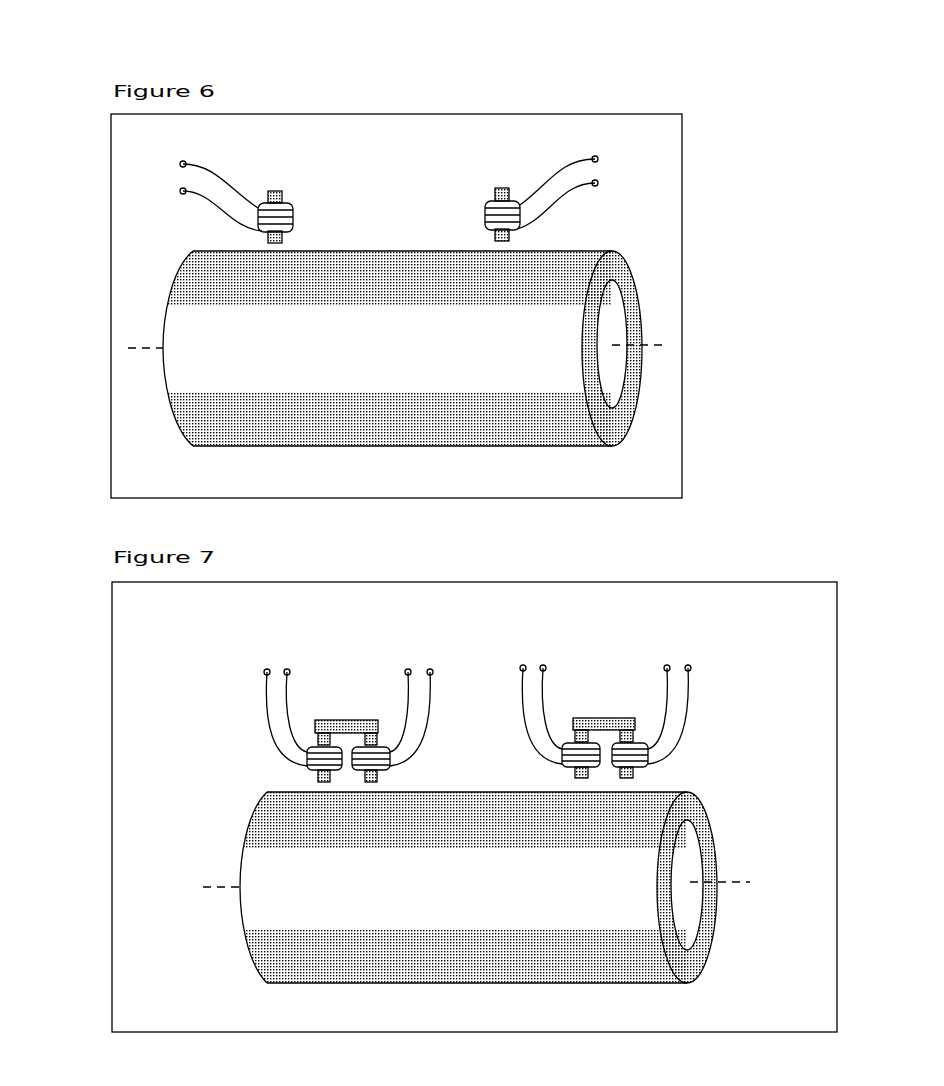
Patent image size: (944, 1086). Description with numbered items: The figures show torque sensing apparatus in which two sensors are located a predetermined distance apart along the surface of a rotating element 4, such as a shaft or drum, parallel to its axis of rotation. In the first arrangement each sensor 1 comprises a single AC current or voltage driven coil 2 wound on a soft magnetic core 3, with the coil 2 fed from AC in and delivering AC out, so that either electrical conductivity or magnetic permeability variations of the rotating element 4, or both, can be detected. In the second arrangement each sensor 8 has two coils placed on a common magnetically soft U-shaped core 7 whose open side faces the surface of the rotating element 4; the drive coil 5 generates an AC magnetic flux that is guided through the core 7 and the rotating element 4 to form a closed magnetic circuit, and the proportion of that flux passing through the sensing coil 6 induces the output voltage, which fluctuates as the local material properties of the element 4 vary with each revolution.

In FIG. 6, the sensor 1 is at (395, 128).
In FIG. 6, the coil 2 is at (472, 218).
In FIG. 6, the soft magnetic core 3 is at (496, 183).
In FIG. 6, the rotating element 4 is at (573, 432).
In FIG. 7, the rotating element 4 is at (608, 973).
In FIG. 7, the drive coil 5 is at (298, 759).
In FIG. 7, the sensing coil 6 is at (345, 777).
In FIG. 7, the core 7 is at (603, 704).
In FIG. 7, the sensor 8 is at (437, 662).